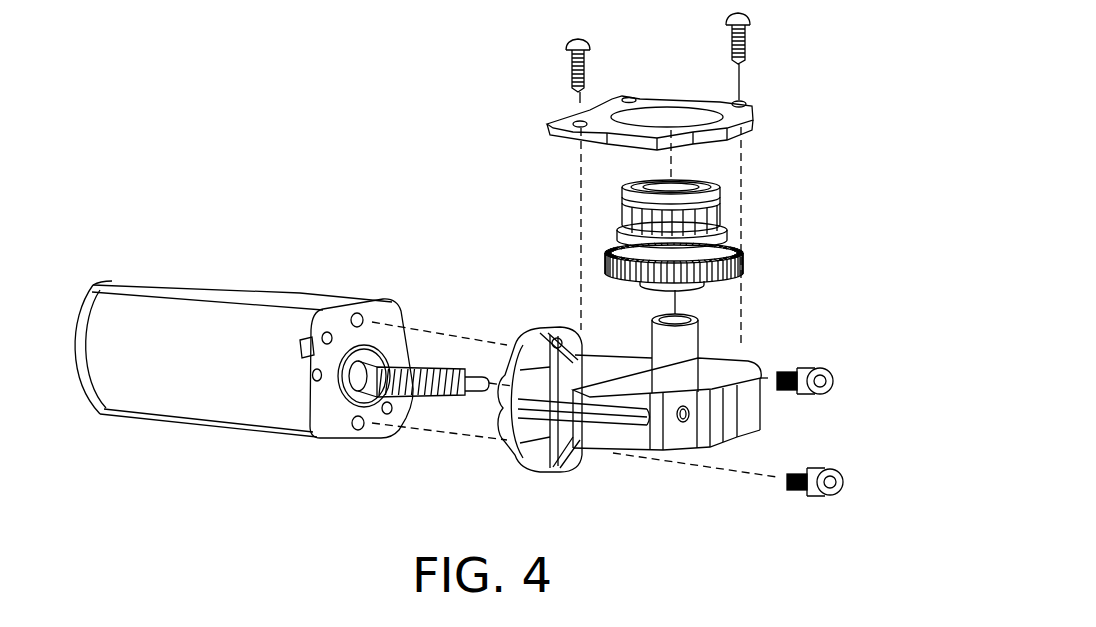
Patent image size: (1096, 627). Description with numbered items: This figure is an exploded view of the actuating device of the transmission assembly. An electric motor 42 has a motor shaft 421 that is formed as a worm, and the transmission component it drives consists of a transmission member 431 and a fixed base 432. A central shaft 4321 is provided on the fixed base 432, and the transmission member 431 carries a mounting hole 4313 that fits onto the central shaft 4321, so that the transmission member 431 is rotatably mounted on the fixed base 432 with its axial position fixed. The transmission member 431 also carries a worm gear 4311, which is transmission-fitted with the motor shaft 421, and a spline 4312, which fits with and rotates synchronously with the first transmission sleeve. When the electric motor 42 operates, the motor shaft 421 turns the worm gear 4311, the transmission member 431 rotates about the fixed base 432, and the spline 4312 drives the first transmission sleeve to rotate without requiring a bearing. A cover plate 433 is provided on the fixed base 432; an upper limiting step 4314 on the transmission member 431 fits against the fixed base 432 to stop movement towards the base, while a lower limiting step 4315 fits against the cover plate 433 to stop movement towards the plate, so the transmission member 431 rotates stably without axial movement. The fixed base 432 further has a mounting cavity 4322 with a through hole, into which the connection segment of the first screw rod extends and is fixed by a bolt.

The electric motor 42 is at (253, 382).
The motor shaft 421 is at (420, 393).
The transmission member 431 is at (561, 231).
The worm gear 4311 is at (605, 266).
The spline 4312 is at (648, 203).
The mounting hole 4313 is at (640, 182).
The upper limiting step 4314 is at (640, 290).
The lower limiting step 4315 is at (618, 233).
The fixed base 432 is at (708, 376).
The central shaft 4321 is at (683, 343).
The mounting cavity 4322 is at (690, 316).
The cover plate 433 is at (756, 108).